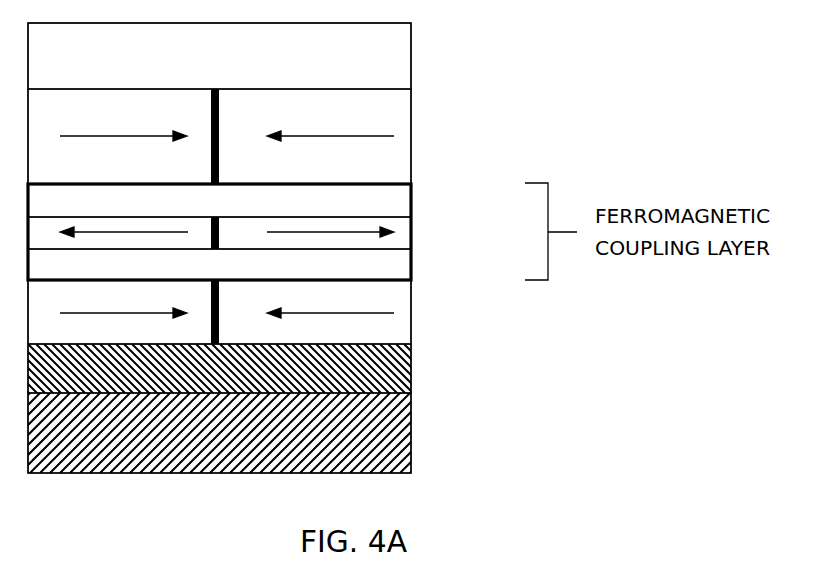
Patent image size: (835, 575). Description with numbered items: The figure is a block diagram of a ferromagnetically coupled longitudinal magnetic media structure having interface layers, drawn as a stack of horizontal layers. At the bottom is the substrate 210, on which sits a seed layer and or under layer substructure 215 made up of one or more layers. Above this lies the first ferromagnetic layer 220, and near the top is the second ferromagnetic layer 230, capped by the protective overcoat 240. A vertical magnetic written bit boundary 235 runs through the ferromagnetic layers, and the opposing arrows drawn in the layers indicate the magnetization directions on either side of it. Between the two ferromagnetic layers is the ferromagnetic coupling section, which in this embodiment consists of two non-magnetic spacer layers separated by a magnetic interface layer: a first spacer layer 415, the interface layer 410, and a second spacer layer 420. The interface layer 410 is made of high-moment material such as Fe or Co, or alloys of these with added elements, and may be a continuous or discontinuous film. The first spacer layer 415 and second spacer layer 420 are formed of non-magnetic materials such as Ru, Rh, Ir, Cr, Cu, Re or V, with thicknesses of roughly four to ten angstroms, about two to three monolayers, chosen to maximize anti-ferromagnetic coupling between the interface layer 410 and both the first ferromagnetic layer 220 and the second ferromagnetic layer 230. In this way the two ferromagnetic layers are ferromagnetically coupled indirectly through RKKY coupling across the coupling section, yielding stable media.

The protective overcoat 240 is at (411, 39).
The magnetic written bit boundary 235 is at (220, 121).
The second ferromagnetic layer 230 is at (411, 136).
The first spacer layer 415 is at (411, 198).
The interface layer 410 is at (411, 233).
The second spacer layer 420 is at (411, 266).
The first ferromagnetic layer 220 is at (411, 314).
The seed layer and or under layer substructure 215 is at (411, 366).
The substrate 210 is at (411, 445).